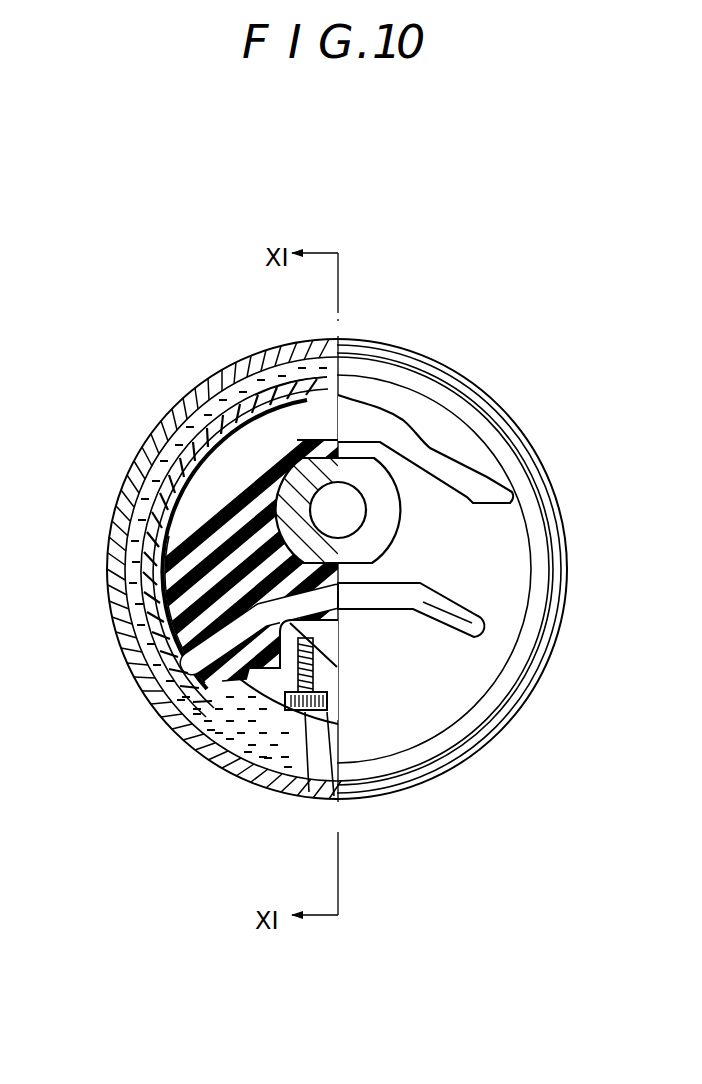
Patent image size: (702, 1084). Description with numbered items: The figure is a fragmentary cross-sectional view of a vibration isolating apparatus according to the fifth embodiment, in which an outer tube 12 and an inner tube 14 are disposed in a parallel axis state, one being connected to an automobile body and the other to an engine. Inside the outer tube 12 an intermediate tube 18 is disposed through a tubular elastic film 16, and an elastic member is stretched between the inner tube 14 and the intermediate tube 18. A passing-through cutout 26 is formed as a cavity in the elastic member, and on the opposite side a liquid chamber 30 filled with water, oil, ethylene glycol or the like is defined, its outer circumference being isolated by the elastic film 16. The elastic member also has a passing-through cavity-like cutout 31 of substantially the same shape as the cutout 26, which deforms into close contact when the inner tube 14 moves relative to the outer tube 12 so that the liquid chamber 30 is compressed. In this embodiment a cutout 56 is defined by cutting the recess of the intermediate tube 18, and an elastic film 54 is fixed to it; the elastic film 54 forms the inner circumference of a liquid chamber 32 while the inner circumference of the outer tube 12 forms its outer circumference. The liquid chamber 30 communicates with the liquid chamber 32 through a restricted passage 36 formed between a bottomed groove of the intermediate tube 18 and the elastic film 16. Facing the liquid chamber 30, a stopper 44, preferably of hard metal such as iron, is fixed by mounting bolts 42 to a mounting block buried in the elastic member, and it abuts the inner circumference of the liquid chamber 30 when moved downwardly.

The outer tube 12 is at (533, 446).
The inner tube 14 is at (398, 514).
The tubular elastic film 16 is at (552, 608).
The intermediate tube 18 is at (474, 725).
The passing-through cutout 26 is at (410, 440).
The liquid chamber 30 is at (266, 772).
The passing-through cavity-like cutout 31 is at (482, 634).
The liquid chamber 32 is at (196, 392).
The restricted passage 36 is at (133, 578).
The mounting bolts 42 is at (310, 794).
The stopper 44 is at (226, 680).
The elastic film 54 is at (285, 392).
The cutout 56 is at (197, 450).